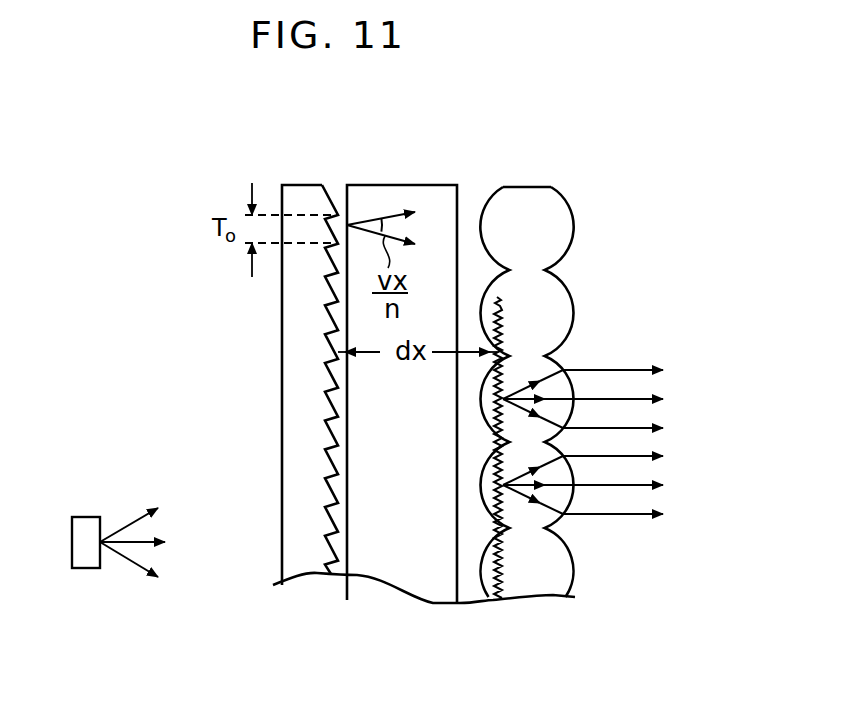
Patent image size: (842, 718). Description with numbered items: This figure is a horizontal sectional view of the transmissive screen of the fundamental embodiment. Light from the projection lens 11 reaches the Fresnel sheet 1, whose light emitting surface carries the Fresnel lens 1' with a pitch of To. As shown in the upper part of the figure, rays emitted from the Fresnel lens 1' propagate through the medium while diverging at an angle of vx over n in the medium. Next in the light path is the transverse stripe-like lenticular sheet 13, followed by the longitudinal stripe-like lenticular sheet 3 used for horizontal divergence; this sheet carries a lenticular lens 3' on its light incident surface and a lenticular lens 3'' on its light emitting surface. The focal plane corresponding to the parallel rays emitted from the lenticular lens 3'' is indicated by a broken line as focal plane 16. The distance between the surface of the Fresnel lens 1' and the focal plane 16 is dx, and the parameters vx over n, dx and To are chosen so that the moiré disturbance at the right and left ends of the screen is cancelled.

The Fresnel sheet 1 is at (302, 356).
The Fresnel lens 1' is at (339, 350).
The transverse stripe-like lenticular sheet 13 is at (427, 204).
The longitudinal stripe-like lenticular sheet 3 is at (555, 362).
The lenticular lens 3' is at (490, 364).
The lenticular lens 3'' is at (592, 392).
The focal plane 16 is at (505, 305).
The projection lens 11 is at (86, 517).